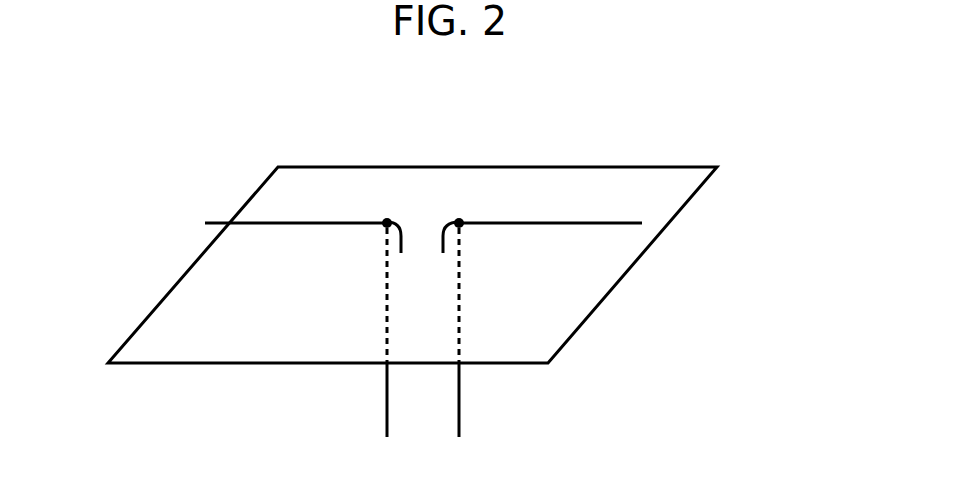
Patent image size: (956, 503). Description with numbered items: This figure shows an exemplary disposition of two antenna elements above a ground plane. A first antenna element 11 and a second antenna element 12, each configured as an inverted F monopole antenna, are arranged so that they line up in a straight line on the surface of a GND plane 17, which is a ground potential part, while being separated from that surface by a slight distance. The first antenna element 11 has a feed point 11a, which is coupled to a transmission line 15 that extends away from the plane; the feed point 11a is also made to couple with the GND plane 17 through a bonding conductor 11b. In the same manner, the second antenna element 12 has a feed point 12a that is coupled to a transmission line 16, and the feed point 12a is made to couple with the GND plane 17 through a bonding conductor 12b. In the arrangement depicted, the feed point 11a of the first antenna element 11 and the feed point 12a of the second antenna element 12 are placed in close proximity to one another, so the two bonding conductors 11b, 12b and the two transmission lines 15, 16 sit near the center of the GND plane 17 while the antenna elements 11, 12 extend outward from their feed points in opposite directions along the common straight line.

The first antenna element 11 is at (317, 223).
The feed point 11a is at (380, 228).
The bonding conductor 11b is at (411, 243).
The second antenna element 12 is at (588, 223).
The feed point 12a is at (466, 227).
The bonding conductor 12b is at (432, 243).
The transmission line 15 is at (383, 400).
The transmission line 16 is at (462, 400).
The GND plane 17 is at (587, 282).